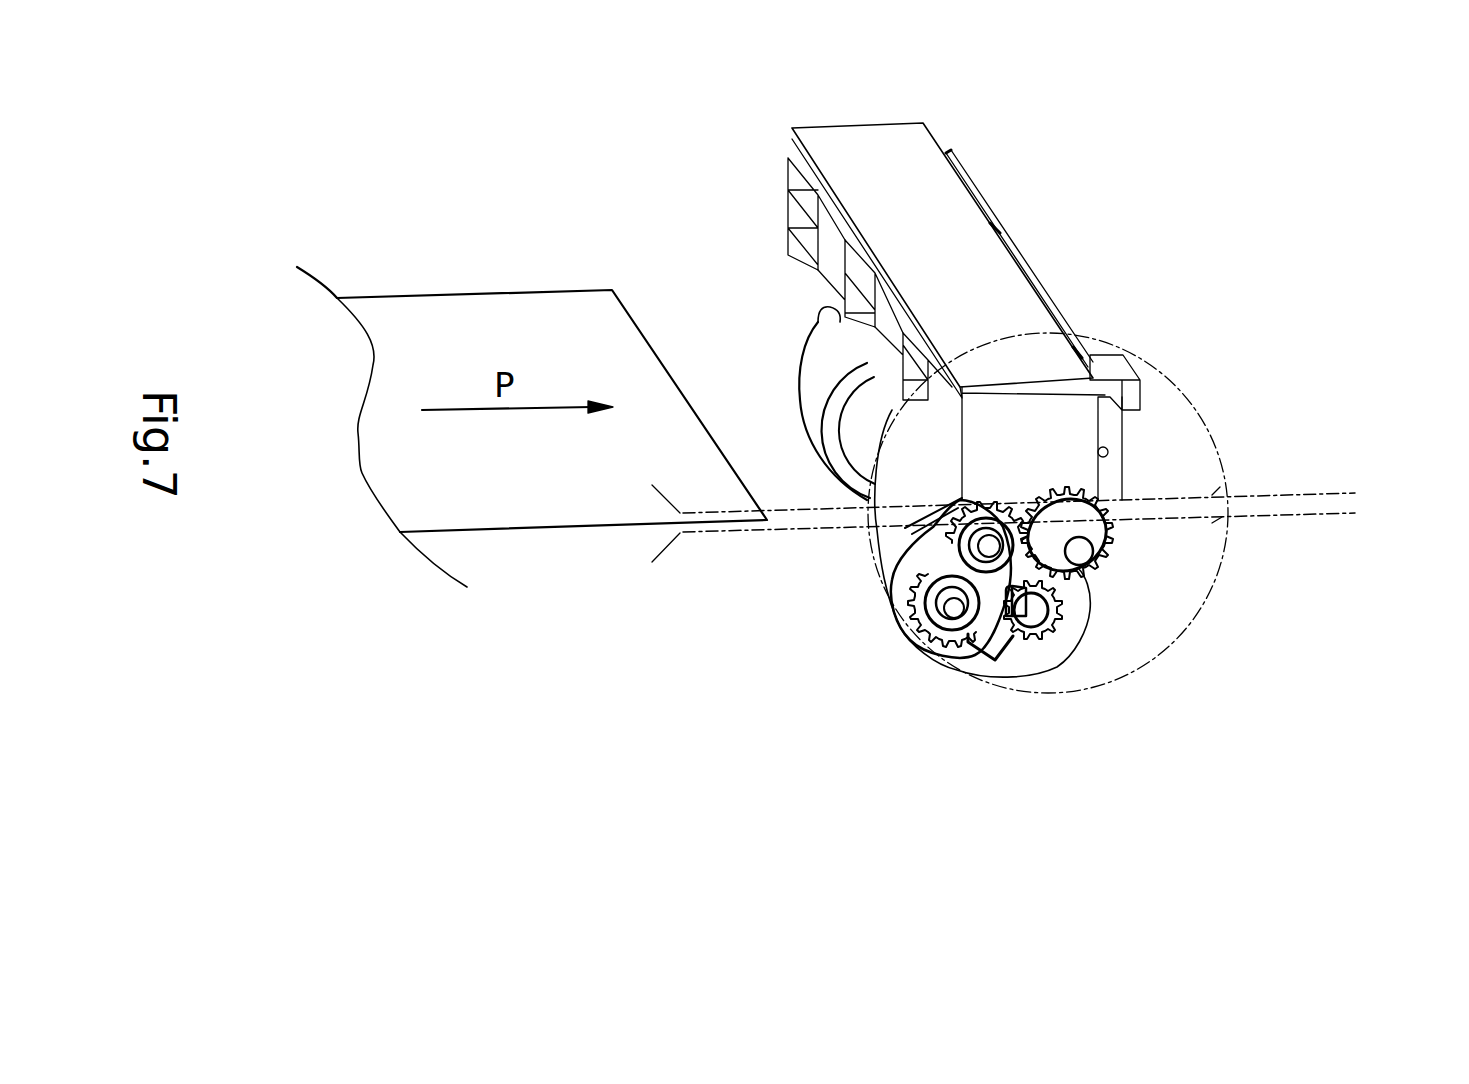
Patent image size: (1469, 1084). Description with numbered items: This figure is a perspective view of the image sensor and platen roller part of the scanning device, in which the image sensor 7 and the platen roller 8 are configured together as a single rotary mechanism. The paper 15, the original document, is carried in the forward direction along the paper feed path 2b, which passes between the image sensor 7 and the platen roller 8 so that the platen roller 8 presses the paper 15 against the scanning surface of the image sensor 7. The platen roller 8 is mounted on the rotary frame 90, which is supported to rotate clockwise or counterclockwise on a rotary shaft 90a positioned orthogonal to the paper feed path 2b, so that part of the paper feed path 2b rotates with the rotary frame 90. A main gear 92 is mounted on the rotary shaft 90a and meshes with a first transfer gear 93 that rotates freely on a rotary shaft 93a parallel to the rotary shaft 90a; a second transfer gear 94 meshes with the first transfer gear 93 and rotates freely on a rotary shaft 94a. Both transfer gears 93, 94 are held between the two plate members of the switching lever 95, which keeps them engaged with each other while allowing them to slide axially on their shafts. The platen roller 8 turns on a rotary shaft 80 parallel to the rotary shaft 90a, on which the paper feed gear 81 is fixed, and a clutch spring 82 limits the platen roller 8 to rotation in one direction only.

The paper 15 is at (512, 315).
The paper feed path 2b is at (1348, 503).
The image sensor 7 is at (998, 260).
The platen roller 8 is at (813, 362).
The rotary frame 90 is at (1200, 620).
The rotary shaft 90a is at (1080, 553).
The main gear 92 is at (1080, 493).
The first transfer gear 93 is at (1000, 510).
The rotary shaft 93a is at (993, 542).
The second transfer gear 94 is at (923, 630).
The rotary shaft 94a is at (953, 613).
The switching lever 95 is at (940, 563).
The rotary shaft 80 is at (1030, 615).
The paper feed gear 81 is at (1053, 610).
The clutch spring 82 is at (997, 632).